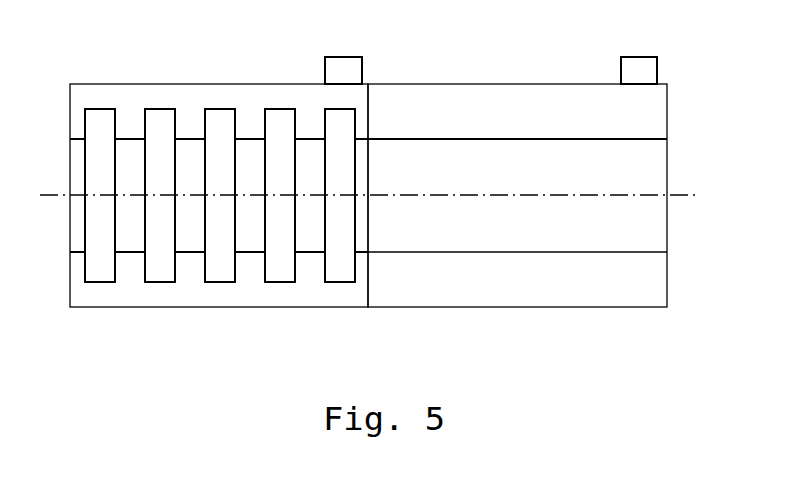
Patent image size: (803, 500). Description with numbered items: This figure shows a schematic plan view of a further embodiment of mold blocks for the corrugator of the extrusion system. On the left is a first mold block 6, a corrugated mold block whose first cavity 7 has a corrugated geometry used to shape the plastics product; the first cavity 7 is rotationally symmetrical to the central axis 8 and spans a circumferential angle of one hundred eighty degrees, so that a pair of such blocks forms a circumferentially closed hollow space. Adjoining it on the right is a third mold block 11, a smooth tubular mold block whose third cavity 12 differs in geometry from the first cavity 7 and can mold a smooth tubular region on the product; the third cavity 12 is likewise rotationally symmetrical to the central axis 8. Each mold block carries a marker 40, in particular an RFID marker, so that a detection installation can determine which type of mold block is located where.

The first mold block 6 is at (288, 83).
The first cavity 7 is at (98, 217).
The central axis 8 is at (695, 193).
The third mold block 11 is at (583, 83).
The third cavity 12 is at (643, 238).
The marker 40 is at (362, 73).